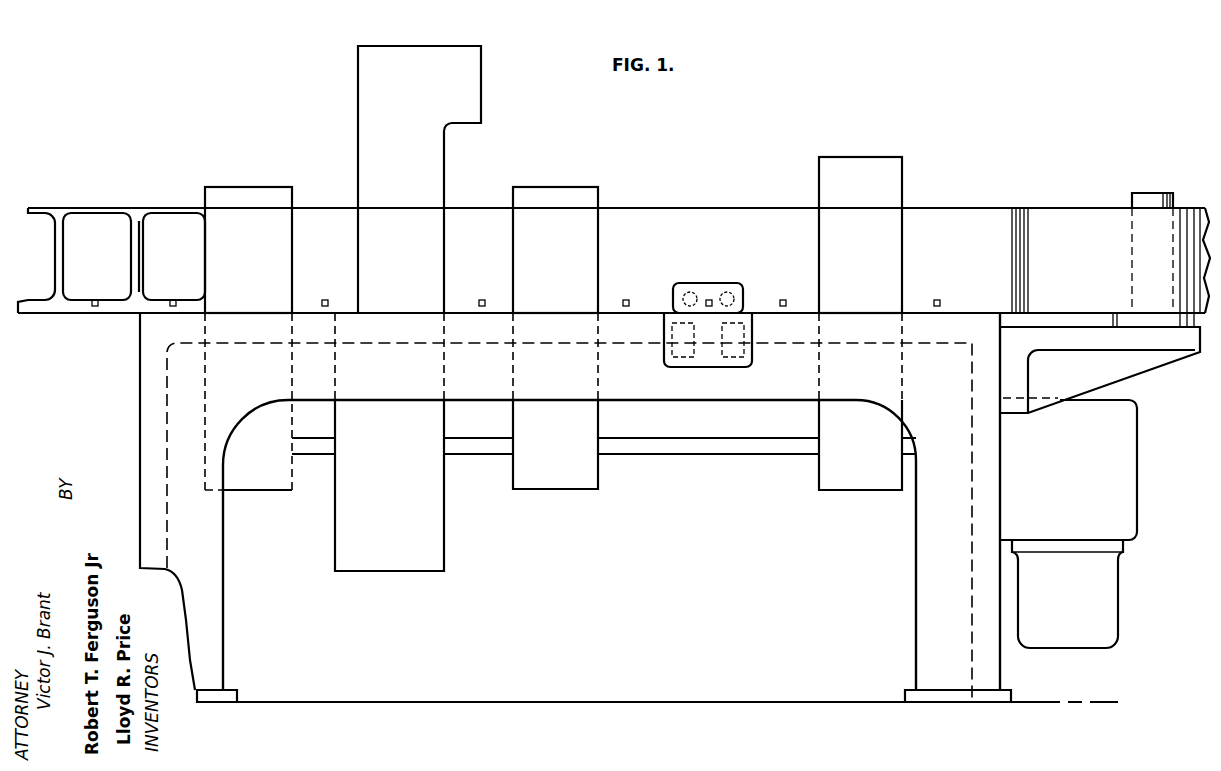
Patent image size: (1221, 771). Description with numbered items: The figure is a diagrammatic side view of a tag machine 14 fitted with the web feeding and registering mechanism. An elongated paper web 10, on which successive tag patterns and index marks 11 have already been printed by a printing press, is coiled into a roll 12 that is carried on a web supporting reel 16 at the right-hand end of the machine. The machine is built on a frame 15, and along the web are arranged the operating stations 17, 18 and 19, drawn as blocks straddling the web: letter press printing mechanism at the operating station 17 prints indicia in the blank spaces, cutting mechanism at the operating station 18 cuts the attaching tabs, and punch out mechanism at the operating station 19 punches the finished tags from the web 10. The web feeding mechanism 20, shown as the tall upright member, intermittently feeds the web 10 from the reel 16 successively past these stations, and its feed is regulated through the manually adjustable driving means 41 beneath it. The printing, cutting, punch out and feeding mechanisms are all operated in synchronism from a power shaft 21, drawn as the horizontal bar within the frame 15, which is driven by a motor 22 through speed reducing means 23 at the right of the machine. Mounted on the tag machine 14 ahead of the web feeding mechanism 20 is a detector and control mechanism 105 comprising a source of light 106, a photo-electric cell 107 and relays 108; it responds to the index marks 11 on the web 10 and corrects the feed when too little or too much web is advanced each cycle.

The paper web 10 is at (125, 208).
The index marks 11 is at (95, 300).
The roll 12 is at (1066, 213).
The tag machine 14 is at (140, 359).
The frame 15 is at (655, 400).
The web supporting reel 16 is at (1156, 198).
The operating station 17 is at (886, 191).
The operating station 18 is at (590, 206).
The operating station 19 is at (263, 203).
The web feeding mechanism 20 is at (433, 164).
The power shaft 21 is at (739, 448).
The motor 22 is at (1105, 599).
The speed reducing means 23 is at (1137, 506).
The manually adjustable driving means 41 is at (437, 553).
The detector and control mechanism 105 is at (727, 286).
The source of light 106 is at (682, 296).
The photo-electric cell 107 is at (735, 298).
The relays 108 is at (733, 360).